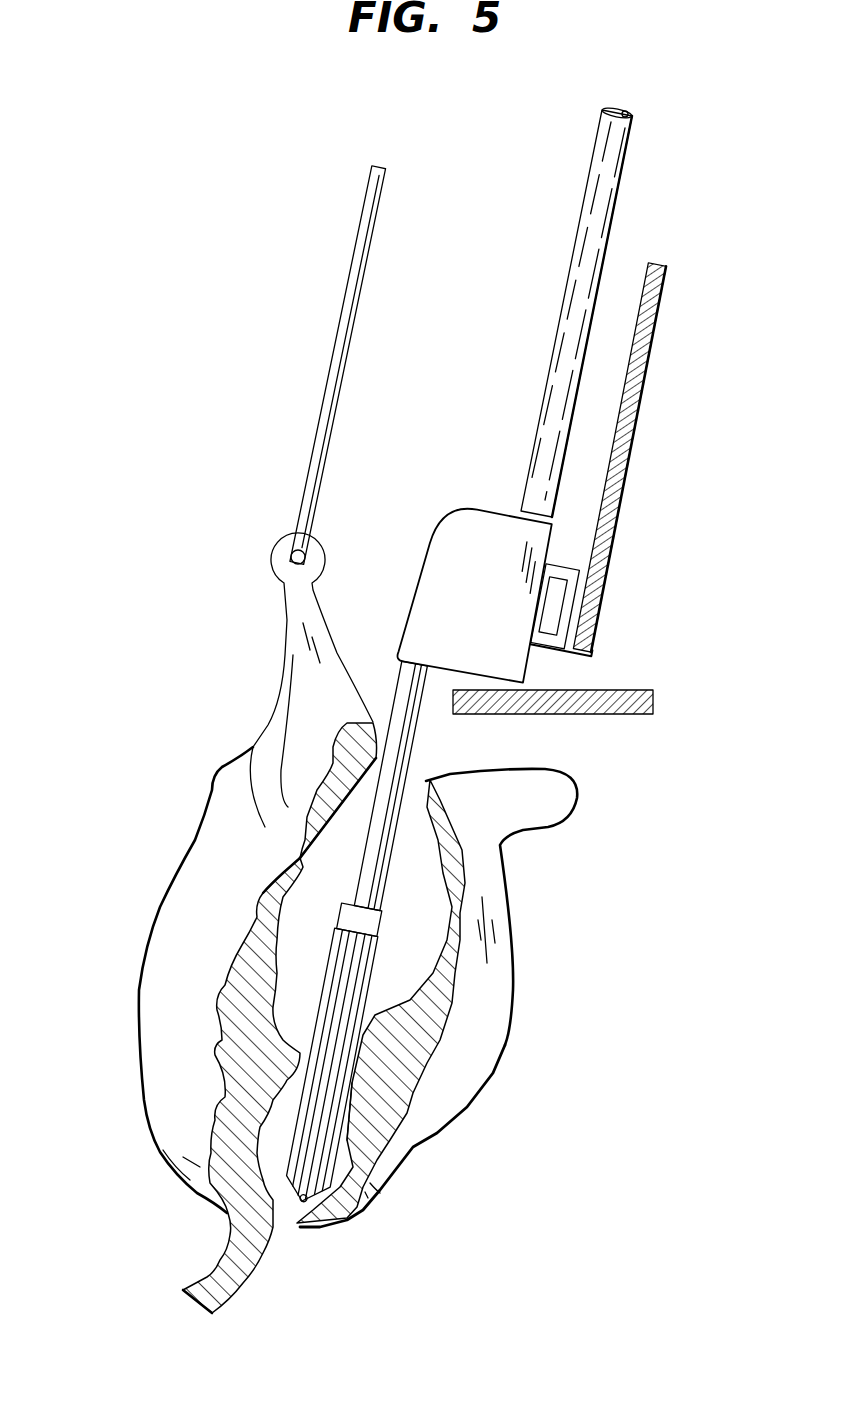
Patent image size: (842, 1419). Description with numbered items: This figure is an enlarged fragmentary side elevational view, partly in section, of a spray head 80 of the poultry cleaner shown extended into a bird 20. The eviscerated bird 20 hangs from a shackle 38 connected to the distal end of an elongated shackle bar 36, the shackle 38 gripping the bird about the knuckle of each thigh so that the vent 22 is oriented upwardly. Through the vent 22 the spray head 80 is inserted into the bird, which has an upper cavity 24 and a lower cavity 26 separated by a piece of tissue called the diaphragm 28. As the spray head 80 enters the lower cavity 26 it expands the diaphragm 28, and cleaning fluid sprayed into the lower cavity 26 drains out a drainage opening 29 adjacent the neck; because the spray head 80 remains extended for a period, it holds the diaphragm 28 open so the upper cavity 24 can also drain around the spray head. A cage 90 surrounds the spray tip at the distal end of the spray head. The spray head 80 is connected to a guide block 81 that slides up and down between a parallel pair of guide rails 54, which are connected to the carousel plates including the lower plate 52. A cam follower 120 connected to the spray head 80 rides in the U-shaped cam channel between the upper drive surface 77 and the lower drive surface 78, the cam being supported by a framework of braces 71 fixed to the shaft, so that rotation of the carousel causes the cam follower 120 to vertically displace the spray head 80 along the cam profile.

The eviscerated bird 20 is at (150, 978).
The vent 22 is at (430, 790).
The upper cavity 24 is at (420, 912).
The lower cavity 26 is at (369, 1212).
The diaphragm 28 is at (353, 1082).
The drainage opening 29 is at (287, 1222).
The shackle bar 36 is at (346, 316).
The shackle 38 is at (290, 555).
The lower plate 52 is at (655, 702).
The guide rail 54 is at (600, 215).
The brace 71 is at (655, 392).
The upper drive surface 77 is at (573, 565).
The lower drive surface 78 is at (556, 650).
The spray head 80 is at (326, 899).
The guide block 81 is at (487, 594).
The cage 90 is at (363, 998).
The cam follower 120 is at (547, 620).